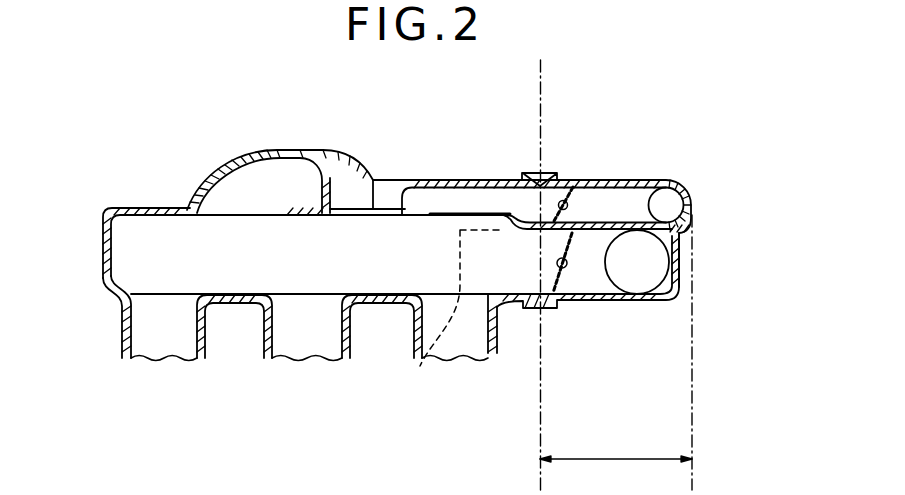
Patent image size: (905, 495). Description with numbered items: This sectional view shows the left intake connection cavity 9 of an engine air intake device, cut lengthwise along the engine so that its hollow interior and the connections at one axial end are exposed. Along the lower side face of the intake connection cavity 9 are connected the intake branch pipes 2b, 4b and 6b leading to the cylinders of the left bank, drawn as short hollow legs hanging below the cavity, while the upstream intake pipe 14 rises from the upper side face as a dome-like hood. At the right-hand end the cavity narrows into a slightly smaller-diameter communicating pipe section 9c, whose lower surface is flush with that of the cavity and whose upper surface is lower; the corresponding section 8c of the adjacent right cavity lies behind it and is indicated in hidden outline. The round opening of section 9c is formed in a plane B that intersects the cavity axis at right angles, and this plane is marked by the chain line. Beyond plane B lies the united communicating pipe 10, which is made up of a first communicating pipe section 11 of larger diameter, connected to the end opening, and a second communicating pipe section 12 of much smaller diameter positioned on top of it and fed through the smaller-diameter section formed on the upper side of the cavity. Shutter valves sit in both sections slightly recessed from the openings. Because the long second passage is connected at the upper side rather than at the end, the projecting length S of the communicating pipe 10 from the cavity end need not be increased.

The left intake connection cavity 9 is at (117, 247).
The upstream intake pipe 14 is at (232, 197).
The intake branch pipe 2b is at (127, 333).
The intake branch pipe 4b is at (267, 333).
The intake branch pipe 6b is at (412, 307).
The communicating pipe section 8c is at (450, 311).
The communicating pipe section 9c is at (521, 300).
The second communicating pipe section 12 is at (695, 197).
The united communicating pipe 10 is at (682, 236).
The first communicating pipe section 11 is at (680, 277).
The plane B is at (544, 96).
The projecting length S is at (616, 447).